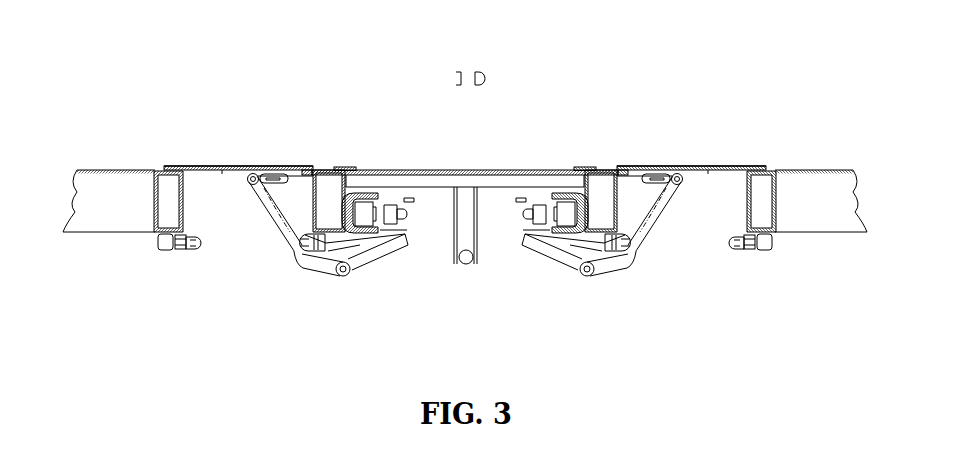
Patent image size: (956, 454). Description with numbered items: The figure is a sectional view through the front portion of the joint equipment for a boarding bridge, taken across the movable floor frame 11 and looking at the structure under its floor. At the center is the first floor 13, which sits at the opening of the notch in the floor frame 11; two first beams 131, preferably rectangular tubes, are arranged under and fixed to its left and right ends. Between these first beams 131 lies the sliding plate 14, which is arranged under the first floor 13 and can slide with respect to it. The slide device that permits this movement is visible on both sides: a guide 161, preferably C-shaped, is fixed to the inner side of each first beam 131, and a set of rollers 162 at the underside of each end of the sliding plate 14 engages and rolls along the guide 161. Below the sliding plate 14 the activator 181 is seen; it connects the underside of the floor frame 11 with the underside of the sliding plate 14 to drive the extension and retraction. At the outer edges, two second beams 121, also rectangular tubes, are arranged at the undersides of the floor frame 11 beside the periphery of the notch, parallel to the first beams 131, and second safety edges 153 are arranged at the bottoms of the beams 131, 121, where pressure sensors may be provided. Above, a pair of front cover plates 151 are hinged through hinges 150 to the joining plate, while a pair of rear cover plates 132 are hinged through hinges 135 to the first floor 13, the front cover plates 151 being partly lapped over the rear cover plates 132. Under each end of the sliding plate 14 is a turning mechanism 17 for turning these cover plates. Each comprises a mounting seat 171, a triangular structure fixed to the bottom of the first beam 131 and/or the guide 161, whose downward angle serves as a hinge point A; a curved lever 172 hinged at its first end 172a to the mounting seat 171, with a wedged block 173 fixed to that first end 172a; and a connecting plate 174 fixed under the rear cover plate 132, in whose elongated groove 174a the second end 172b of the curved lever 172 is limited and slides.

The floor frame 11 is at (126, 235).
The first floor 13 is at (485, 169).
The sliding plate 14 is at (455, 184).
The turning mechanism 17 is at (262, 298).
The second beam 121 is at (195, 190).
The first beam 131 is at (314, 182).
The rear cover plate 132 is at (220, 174).
The hinge 135 is at (308, 170).
The hinge 150 is at (349, 167).
The front cover plate 151 is at (215, 167).
The second safety edge 153 is at (188, 253).
The guide 161 is at (350, 196).
The set of rollers 162 is at (369, 208).
The mounting seat 171 is at (364, 264).
The curved lever 172 is at (283, 240).
The first end of the curved lever 172a is at (335, 276).
The second end of the curved lever 172b is at (253, 172).
The wedged block 173 is at (394, 246).
The connecting plate 174 is at (262, 188).
The elongated groove 174a is at (278, 174).
The activator 181 is at (466, 265).
The hinge point A is at (350, 278).